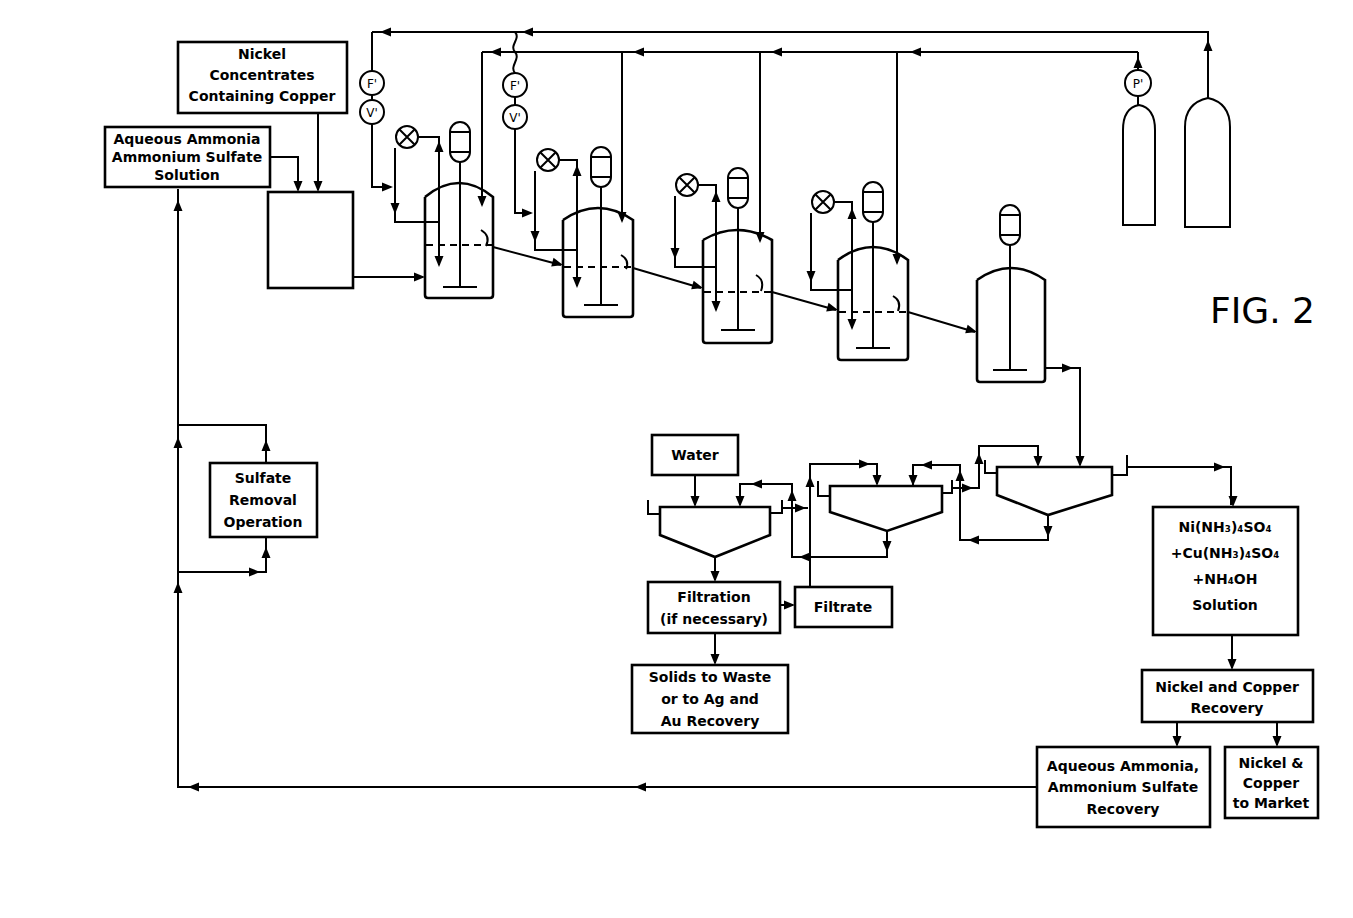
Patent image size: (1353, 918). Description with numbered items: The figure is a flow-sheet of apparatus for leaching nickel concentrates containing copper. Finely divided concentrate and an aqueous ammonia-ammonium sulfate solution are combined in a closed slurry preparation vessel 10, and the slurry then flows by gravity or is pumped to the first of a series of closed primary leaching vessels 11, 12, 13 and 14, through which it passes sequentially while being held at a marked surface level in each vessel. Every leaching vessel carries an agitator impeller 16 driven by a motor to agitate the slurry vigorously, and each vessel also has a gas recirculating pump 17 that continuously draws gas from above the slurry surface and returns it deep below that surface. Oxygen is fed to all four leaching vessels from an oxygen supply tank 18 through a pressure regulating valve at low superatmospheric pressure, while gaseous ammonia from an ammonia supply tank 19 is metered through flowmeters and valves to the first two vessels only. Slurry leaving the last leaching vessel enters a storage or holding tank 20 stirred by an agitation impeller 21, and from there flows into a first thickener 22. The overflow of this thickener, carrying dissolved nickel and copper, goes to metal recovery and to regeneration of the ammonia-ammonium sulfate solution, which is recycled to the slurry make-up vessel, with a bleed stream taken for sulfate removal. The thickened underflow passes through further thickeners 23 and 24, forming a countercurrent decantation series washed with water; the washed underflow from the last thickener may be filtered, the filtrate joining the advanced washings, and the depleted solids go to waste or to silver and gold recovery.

The slurry preparation vessel 10 is at (268, 255).
The first primary leaching vessel 11 is at (425, 262).
The second primary leaching vessel 12 is at (563, 290).
The third primary leaching vessel 13 is at (703, 313).
The fourth primary leaching vessel 14 is at (838, 333).
The agitator impeller 16 is at (469, 285).
The gas recirculating pump 17 is at (408, 126).
The oxygen supply tank 18 is at (1123, 183).
The ammonia supply tank 19 is at (1190, 190).
The storage or holding tank 20 is at (1045, 320).
The agitation impeller 21 is at (1022, 368).
The first thickener 22 is at (1056, 485).
The second thickener 23 is at (885, 505).
The third thickener 24 is at (715, 528).